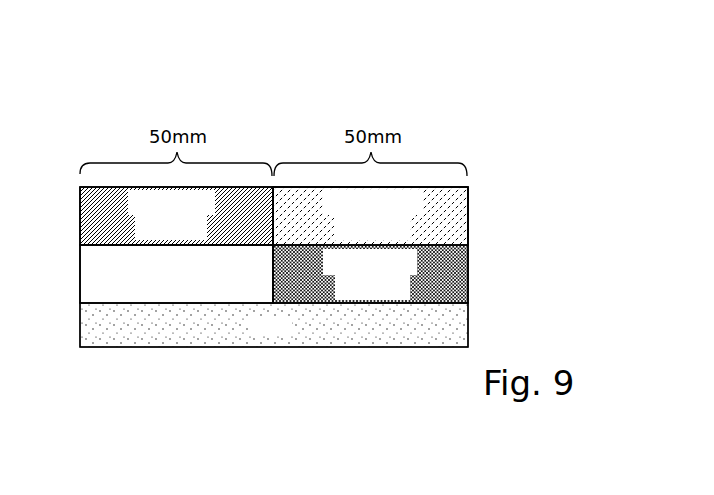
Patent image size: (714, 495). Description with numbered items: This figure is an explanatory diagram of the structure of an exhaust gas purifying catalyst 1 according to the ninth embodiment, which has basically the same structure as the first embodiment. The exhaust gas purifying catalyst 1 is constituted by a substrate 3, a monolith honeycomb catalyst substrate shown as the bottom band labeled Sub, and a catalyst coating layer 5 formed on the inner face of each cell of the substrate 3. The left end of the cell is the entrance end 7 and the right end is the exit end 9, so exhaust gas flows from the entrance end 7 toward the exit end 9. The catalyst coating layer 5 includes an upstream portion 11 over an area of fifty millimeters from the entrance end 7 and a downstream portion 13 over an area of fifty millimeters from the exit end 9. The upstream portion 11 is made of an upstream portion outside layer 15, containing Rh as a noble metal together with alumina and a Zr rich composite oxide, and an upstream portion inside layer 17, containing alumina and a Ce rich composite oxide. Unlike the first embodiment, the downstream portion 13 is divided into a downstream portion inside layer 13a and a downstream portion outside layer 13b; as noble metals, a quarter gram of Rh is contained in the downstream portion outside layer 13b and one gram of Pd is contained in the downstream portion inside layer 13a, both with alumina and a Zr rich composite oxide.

The exhaust gas purifying catalyst 1 is at (467, 107).
The substrate 3 is at (430, 337).
The catalyst coating layer 5 is at (272, 187).
The entrance end 7 is at (80, 257).
The exit end 9 is at (468, 216).
The upstream portion 11 is at (105, 195).
The downstream portion 13 is at (427, 195).
The downstream portion inside layer 13a is at (460, 278).
The downstream portion outside layer 13b is at (452, 203).
The upstream portion outside layer 15 is at (90, 221).
The upstream portion inside layer 17 is at (83, 289).